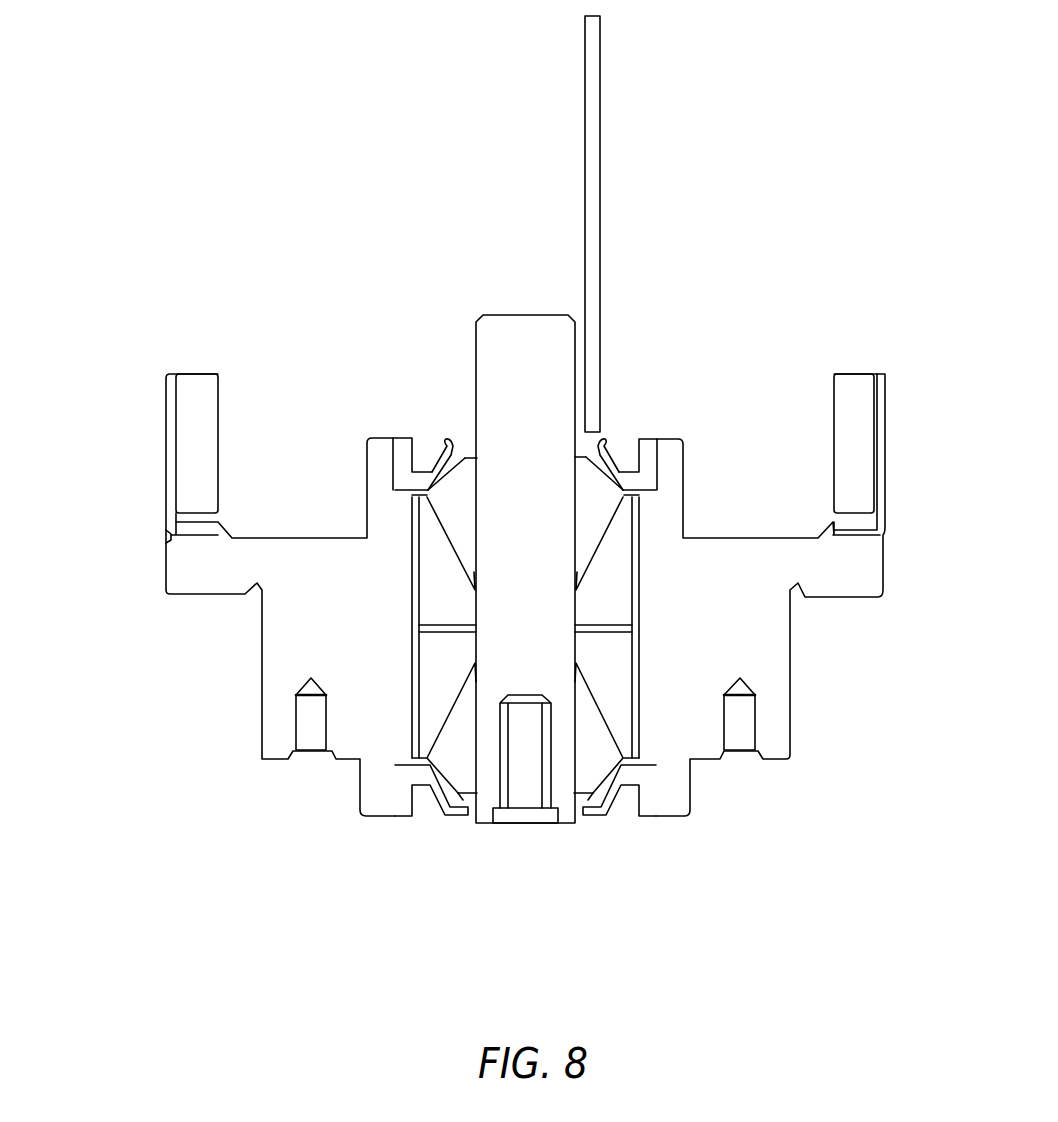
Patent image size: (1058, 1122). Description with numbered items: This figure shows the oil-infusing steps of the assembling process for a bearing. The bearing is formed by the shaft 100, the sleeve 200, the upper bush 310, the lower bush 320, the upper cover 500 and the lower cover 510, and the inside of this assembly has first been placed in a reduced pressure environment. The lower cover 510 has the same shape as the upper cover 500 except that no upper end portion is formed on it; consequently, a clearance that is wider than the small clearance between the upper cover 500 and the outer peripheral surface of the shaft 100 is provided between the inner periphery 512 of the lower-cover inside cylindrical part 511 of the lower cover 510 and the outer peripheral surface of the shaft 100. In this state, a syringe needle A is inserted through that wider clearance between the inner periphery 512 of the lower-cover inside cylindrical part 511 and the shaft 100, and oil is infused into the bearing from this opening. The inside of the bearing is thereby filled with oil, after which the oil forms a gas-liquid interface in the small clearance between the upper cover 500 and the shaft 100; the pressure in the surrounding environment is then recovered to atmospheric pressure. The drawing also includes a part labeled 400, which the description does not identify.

The shaft 100 is at (508, 328).
The sleeve 200 is at (437, 590).
The upper bush 310 is at (462, 525).
The lower bush 320 is at (583, 718).
The fixing screw 400 is at (282, 735).
The upper cover 500 is at (645, 803).
The lower cover 510 is at (405, 452).
The lower-cover inside cylindrical part 511 is at (443, 440).
The inner periphery 512 is at (603, 442).
The syringe needle A is at (600, 75).